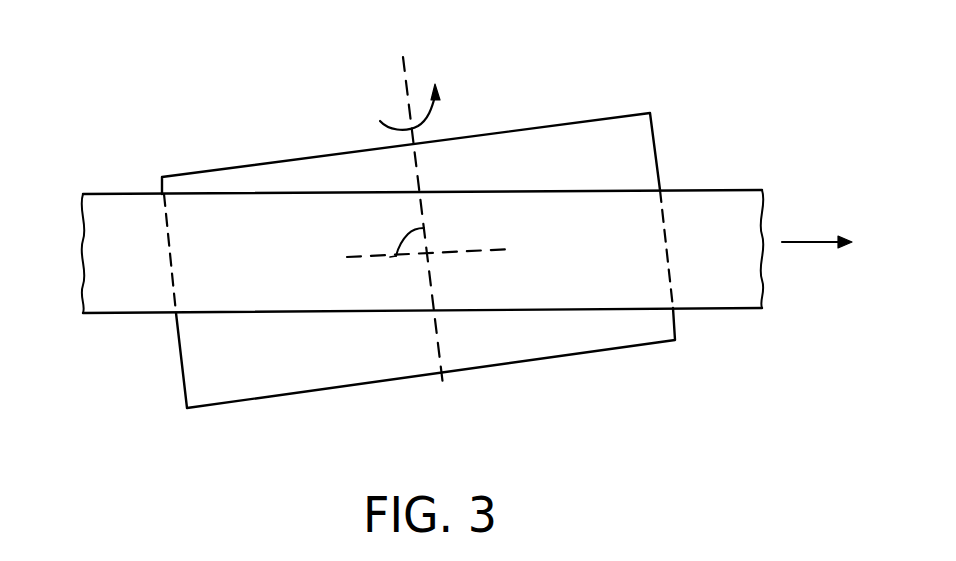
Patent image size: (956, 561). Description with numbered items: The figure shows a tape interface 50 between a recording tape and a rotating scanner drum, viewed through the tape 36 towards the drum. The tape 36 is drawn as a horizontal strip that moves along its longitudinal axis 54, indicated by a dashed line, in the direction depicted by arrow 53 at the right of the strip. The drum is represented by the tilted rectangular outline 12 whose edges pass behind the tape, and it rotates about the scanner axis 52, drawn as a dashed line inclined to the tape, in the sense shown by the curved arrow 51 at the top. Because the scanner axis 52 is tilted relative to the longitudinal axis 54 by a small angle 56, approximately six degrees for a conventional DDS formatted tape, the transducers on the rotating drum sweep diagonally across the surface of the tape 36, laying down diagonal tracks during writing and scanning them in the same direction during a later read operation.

The tape interface 50 is at (188, 74).
The arrow 51 is at (430, 121).
The scanner axis 52 is at (444, 386).
The arrow 53 is at (806, 242).
The longitudinal axis 54 is at (512, 249).
The angle 56 is at (400, 232).
The rotatable element (roller / blade) 12 is at (604, 351).
The tape 36 is at (740, 309).